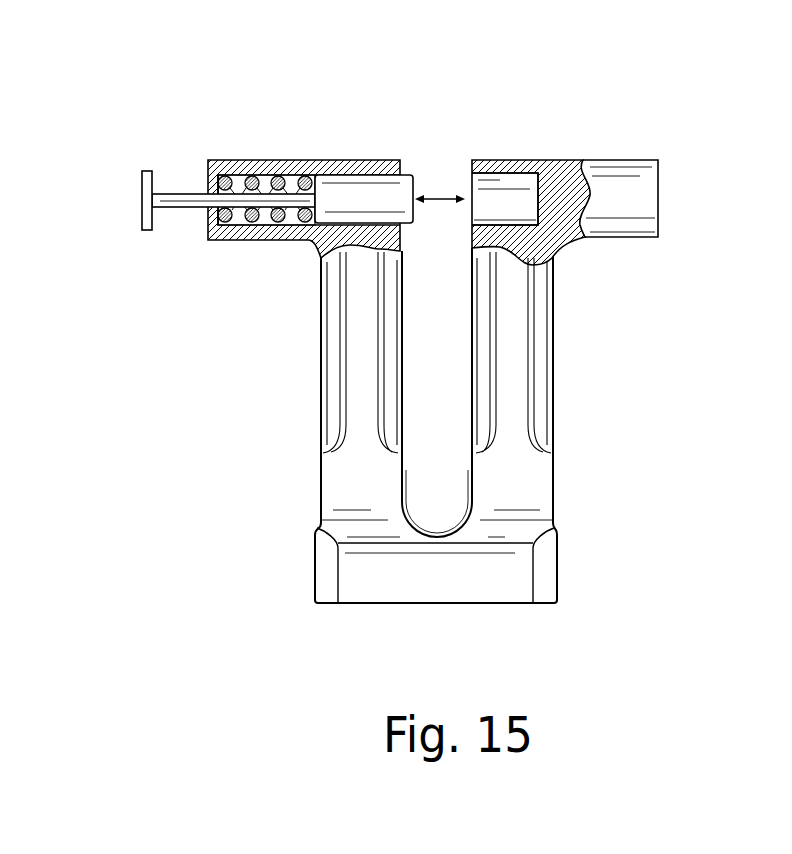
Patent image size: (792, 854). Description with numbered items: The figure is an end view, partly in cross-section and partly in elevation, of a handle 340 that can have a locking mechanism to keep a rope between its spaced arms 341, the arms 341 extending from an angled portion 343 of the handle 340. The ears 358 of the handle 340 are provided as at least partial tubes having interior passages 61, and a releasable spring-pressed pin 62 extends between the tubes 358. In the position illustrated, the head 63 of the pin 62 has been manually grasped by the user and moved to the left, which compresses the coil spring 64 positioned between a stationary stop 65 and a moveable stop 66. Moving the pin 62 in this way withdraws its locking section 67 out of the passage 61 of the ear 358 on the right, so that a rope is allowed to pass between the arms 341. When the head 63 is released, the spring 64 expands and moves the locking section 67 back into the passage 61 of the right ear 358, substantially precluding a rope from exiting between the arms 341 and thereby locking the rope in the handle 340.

The handle 340 is at (705, 145).
The arms 341 is at (360, 343).
The angled portion 343 is at (513, 578).
The ears 358 is at (623, 195).
The interior passages 61 is at (263, 175).
The spring-pressed pin 62 is at (178, 220).
The head 63 is at (145, 193).
The coil spring 64 is at (235, 212).
The stationary stop 65 is at (222, 175).
The moveable stop 66 is at (292, 222).
The locking section 67 is at (370, 201).